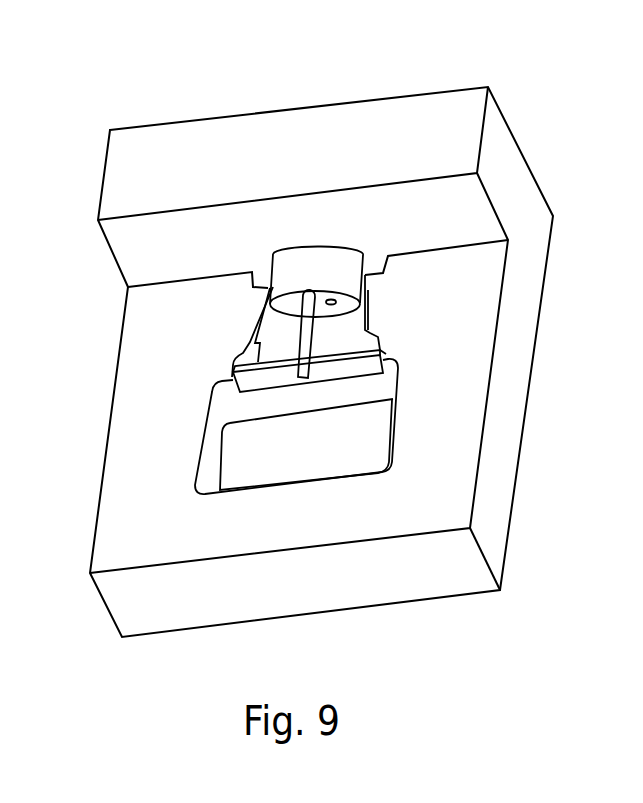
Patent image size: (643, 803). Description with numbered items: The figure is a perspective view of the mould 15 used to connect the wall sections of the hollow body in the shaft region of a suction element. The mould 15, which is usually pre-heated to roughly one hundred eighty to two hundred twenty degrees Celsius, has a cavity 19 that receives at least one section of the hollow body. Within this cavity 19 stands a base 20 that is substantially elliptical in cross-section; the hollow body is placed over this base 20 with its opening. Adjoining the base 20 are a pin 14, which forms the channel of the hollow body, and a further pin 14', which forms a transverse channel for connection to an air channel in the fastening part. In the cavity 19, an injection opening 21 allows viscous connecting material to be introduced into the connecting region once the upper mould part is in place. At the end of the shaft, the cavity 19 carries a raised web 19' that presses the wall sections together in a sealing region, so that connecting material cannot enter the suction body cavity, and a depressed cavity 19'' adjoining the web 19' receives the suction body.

The mould 15 is at (417, 118).
The base 20 is at (295, 278).
The injection opening 21 is at (330, 298).
The pin 14 is at (453, 323).
The pin 14' is at (159, 324).
The cavity 19 is at (482, 285).
The raised web 19' is at (206, 377).
The depressed cavity 19'' is at (296, 426).